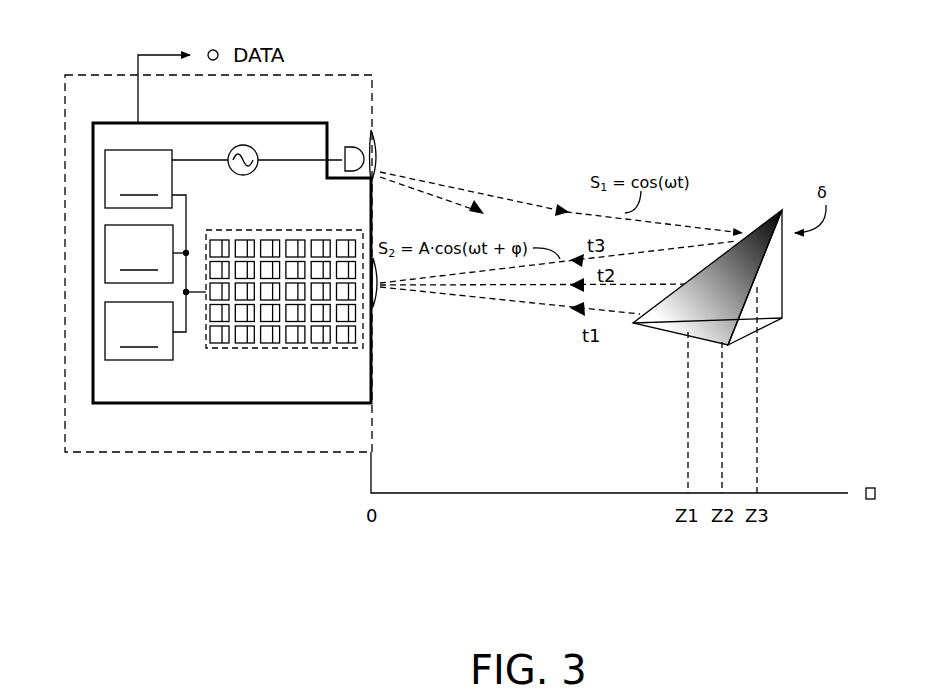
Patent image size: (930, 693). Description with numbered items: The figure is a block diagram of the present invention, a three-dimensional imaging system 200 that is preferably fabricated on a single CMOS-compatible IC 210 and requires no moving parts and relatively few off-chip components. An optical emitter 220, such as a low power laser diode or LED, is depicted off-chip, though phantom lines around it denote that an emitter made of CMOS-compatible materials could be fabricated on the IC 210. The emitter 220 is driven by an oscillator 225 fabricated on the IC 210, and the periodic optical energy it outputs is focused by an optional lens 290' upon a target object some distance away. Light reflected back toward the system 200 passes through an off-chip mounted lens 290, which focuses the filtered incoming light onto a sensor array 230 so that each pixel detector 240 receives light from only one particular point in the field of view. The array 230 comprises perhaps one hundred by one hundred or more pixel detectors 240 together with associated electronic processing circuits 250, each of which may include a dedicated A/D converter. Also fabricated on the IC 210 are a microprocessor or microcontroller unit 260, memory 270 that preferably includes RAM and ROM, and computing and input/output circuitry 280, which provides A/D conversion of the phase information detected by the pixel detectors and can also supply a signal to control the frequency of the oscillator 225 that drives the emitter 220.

The three-dimensional imaging system 200 is at (50, 175).
The integrated circuit 210 is at (234, 116).
The optical emitter 220 is at (350, 152).
The oscillator 225 is at (251, 172).
The sensor array 230 is at (229, 229).
The pixel detector 240 is at (276, 344).
The electronic processing circuit 250 is at (270, 344).
The microprocessor or microcontroller unit 260 is at (139, 254).
The memory 270 is at (139, 331).
The input/output circuitry 280 is at (138, 179).
The lens 290 is at (422, 299).
The lens 290' is at (405, 137).